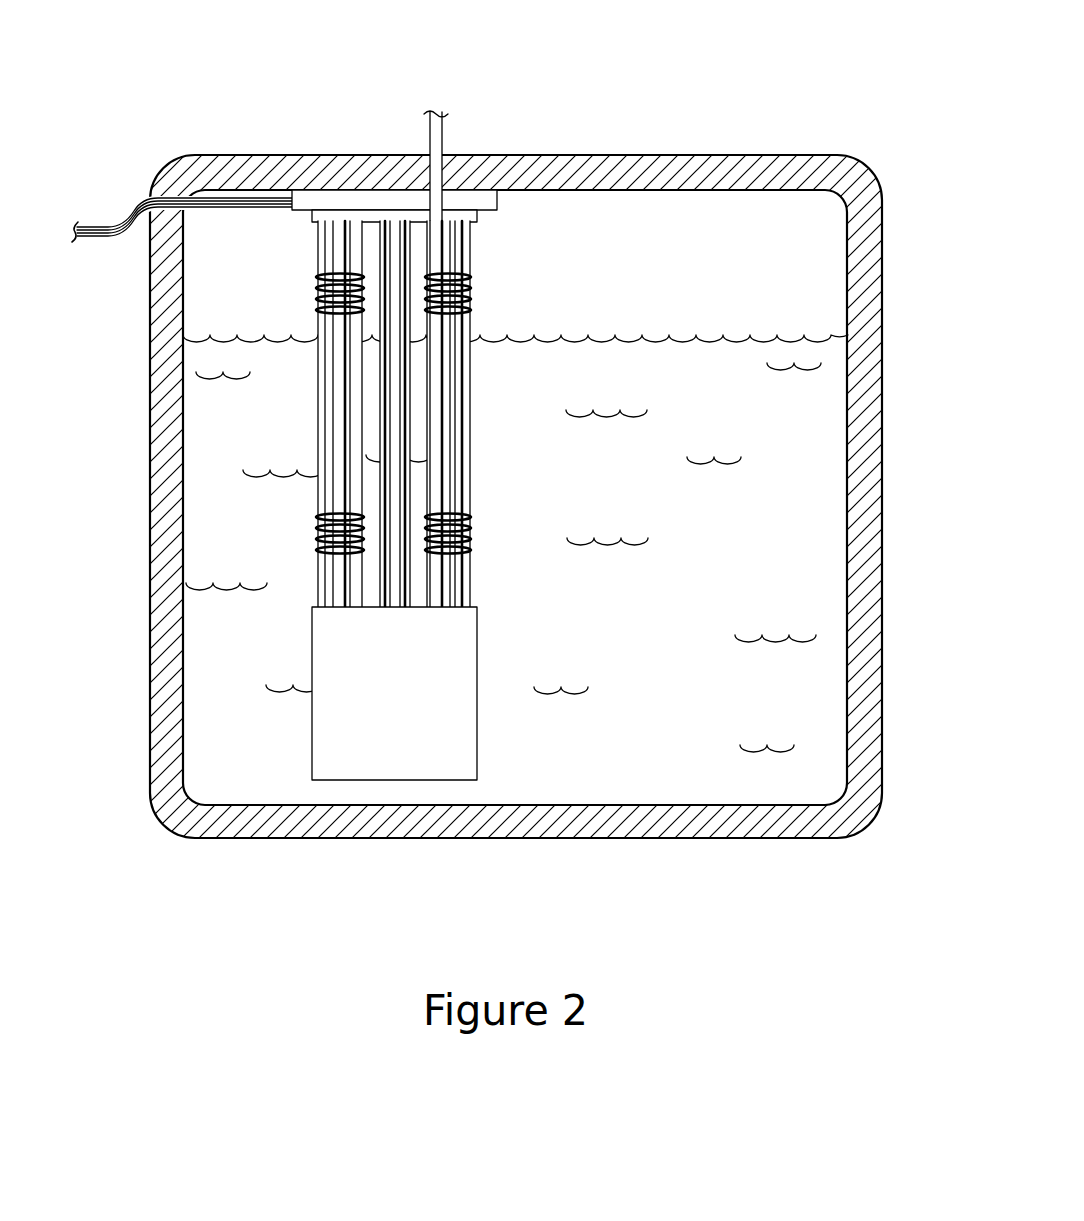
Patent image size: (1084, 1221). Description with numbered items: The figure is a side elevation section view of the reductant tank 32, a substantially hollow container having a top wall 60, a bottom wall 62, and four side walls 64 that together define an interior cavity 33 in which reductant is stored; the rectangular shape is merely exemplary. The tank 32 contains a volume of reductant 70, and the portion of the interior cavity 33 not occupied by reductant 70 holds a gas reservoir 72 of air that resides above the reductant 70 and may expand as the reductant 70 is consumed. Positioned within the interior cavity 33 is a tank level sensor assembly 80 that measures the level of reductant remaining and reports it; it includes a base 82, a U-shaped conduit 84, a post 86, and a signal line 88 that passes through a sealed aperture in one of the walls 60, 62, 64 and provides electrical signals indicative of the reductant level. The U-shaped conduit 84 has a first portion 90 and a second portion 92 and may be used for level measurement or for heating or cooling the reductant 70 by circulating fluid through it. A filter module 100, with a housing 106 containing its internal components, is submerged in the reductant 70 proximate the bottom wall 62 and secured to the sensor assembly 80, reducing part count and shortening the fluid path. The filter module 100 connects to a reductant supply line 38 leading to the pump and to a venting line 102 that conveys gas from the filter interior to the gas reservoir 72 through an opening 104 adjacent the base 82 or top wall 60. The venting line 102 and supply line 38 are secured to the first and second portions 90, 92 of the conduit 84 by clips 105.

The reductant tank 32 is at (736, 52).
The interior cavity 33 is at (828, 296).
The reductant supply line 38 is at (446, 118).
The top wall 60 is at (560, 155).
The bottom wall 62 is at (270, 839).
The side walls 64 is at (150, 410).
The reductant 70 is at (728, 507).
The gas reservoir 72 is at (717, 263).
The tank level sensor assembly 80 is at (562, 381).
The base 82 is at (478, 215).
The U-shaped conduit 84 is at (302, 404).
The post 86 is at (408, 255).
The signal line 88 is at (130, 236).
The first portion 90 is at (318, 440).
The second portion 92 is at (470, 440).
The filter module 100 is at (508, 713).
The venting line 102 is at (340, 318).
The opening 104 is at (358, 256).
The clips 105 is at (335, 277).
The housing 106 is at (312, 705).